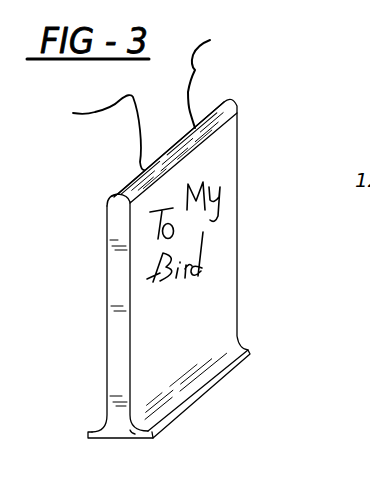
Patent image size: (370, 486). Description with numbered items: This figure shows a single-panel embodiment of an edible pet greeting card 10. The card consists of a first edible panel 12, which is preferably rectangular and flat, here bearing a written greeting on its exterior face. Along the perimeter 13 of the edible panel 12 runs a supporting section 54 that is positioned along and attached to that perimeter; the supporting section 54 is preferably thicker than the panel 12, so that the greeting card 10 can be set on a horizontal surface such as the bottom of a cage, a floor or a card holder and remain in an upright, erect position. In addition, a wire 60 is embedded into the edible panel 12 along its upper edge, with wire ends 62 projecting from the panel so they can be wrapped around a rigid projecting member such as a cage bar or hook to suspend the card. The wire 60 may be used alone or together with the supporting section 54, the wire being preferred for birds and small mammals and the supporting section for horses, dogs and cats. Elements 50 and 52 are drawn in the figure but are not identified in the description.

The greeting card 10 is at (84, 354).
The first edible panel 12 is at (118, 256).
The perimeter 13 is at (118, 383).
The card plate 50 is at (212, 273).
The top end of column 52 is at (132, 182).
The supporting section 54 is at (131, 435).
The wire 60 is at (190, 97).
The wire ends 62 is at (137, 94).